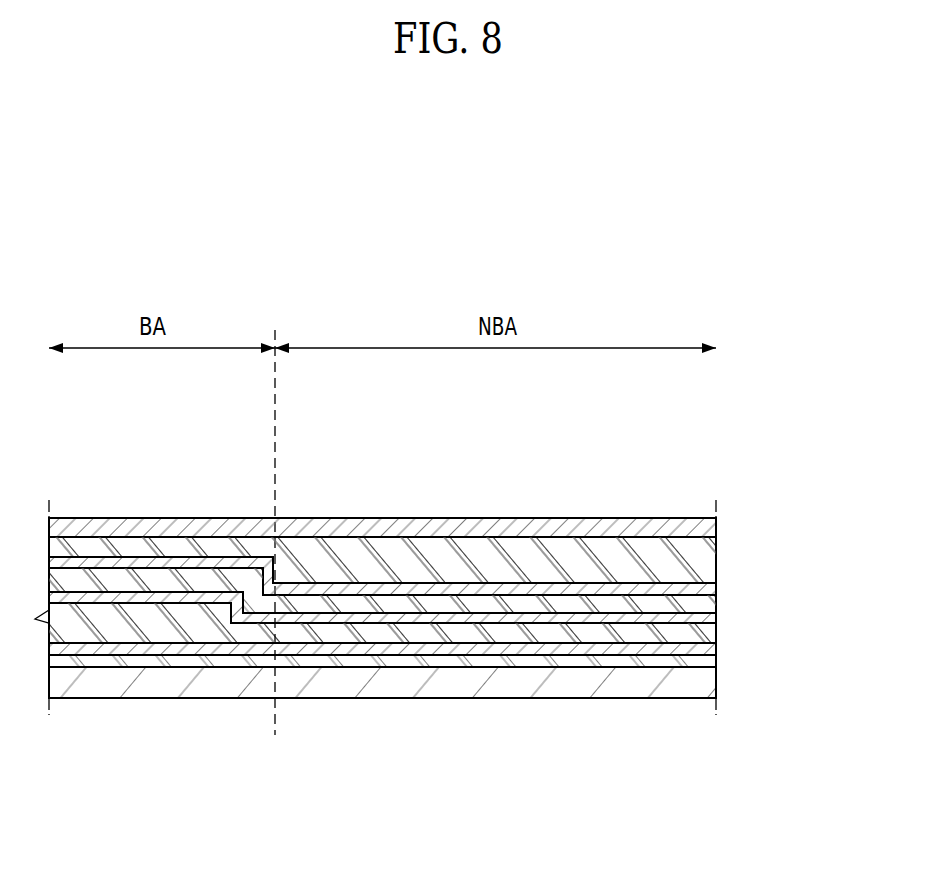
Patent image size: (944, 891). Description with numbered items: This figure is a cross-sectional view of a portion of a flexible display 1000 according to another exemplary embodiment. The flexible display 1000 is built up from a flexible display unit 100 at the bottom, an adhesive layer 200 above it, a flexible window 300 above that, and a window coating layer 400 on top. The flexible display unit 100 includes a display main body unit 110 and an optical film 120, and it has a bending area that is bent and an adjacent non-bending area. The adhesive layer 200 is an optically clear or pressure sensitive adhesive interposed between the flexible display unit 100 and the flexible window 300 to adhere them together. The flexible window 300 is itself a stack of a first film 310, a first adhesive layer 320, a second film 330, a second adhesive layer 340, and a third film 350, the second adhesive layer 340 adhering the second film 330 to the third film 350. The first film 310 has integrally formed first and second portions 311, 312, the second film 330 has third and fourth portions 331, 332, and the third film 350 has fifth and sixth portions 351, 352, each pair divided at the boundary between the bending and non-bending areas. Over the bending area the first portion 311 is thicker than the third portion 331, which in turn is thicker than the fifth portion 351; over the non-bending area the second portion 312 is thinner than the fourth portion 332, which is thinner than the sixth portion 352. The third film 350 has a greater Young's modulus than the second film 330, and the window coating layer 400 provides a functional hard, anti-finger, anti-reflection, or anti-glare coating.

The flexible display 1000 is at (427, 240).
The window coating layer 400 is at (640, 530).
The flexible window 300 is at (451, 608).
The third film 350 is at (703, 554).
The fifth portion 351 is at (180, 546).
The sixth portion 352 is at (347, 553).
The second adhesive layer 340 is at (716, 588).
The second film 330 is at (718, 607).
The third portion 331 is at (103, 583).
The fourth portion 332 is at (388, 605).
The first adhesive layer 320 is at (716, 620).
The first film 310 is at (719, 637).
The first portion 311 is at (188, 625).
The second portion 312 is at (322, 635).
The adhesive layer 200 is at (485, 643).
The flexible display unit 100 is at (382, 738).
The optical film 120 is at (570, 668).
The display main body unit 110 is at (555, 773).